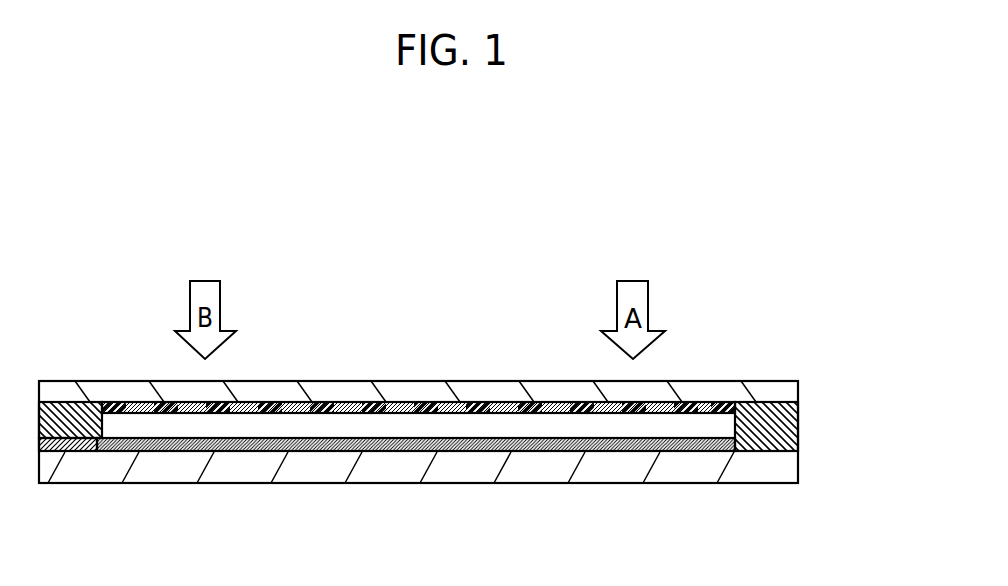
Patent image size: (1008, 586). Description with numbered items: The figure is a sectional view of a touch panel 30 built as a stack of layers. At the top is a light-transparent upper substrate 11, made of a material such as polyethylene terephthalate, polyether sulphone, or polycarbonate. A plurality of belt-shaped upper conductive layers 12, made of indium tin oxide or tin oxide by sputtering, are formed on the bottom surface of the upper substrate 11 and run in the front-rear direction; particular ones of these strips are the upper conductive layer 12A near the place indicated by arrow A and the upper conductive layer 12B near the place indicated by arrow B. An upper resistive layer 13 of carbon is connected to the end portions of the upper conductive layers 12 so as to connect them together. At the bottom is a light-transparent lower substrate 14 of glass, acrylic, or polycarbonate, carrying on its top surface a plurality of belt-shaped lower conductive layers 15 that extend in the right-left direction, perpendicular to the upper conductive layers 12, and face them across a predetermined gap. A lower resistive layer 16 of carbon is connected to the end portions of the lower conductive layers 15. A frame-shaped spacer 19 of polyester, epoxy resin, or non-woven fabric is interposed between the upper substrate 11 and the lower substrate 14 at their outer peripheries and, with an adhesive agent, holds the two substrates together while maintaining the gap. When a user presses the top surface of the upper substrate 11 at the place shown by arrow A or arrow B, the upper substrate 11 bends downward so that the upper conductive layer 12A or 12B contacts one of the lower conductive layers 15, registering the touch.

The upper substrate 11 is at (783, 393).
The upper conductive layers 12 is at (460, 402).
The upper conductive layer 12A is at (637, 413).
The upper conductive layer 12B is at (200, 413).
The upper resistive layer 13 is at (721, 402).
The lower substrate 14 is at (783, 470).
The lower conductive layers 15 is at (478, 445).
The lower resistive layer 16 is at (63, 452).
The spacer 19 is at (788, 435).
The touch panel 30 is at (858, 358).